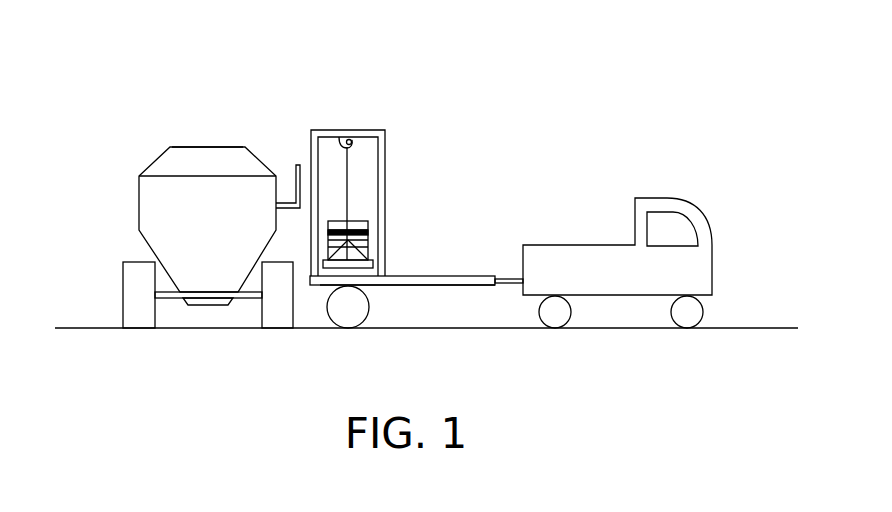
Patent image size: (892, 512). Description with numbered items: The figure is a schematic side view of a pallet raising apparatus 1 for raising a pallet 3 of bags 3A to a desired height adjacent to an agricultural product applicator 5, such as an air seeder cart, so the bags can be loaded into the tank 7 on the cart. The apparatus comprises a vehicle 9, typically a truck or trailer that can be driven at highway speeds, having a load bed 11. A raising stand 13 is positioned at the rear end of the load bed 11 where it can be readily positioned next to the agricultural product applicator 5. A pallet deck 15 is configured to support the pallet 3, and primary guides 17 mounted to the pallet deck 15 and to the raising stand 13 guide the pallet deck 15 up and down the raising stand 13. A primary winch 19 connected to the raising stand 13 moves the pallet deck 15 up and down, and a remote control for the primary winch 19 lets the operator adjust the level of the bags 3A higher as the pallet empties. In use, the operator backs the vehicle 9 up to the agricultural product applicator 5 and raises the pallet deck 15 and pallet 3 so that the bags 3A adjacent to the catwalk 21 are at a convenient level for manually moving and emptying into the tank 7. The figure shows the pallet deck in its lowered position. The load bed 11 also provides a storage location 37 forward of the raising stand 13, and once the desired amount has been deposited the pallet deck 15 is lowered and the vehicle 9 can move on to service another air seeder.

The pallet raising apparatus 1 is at (449, 90).
The pallet 3 is at (353, 268).
The bags 3A is at (357, 223).
The agricultural product applicator 5 is at (157, 159).
The tank 7 is at (209, 146).
The vehicle 9 is at (478, 286).
The load bed 11 is at (487, 278).
The raising stand 13 is at (385, 174).
The pallet deck 15 is at (388, 276).
The primary guides 17 is at (310, 277).
The primary winch 19 is at (330, 132).
The catwalk 21 is at (289, 204).
The storage location 37 is at (425, 276).